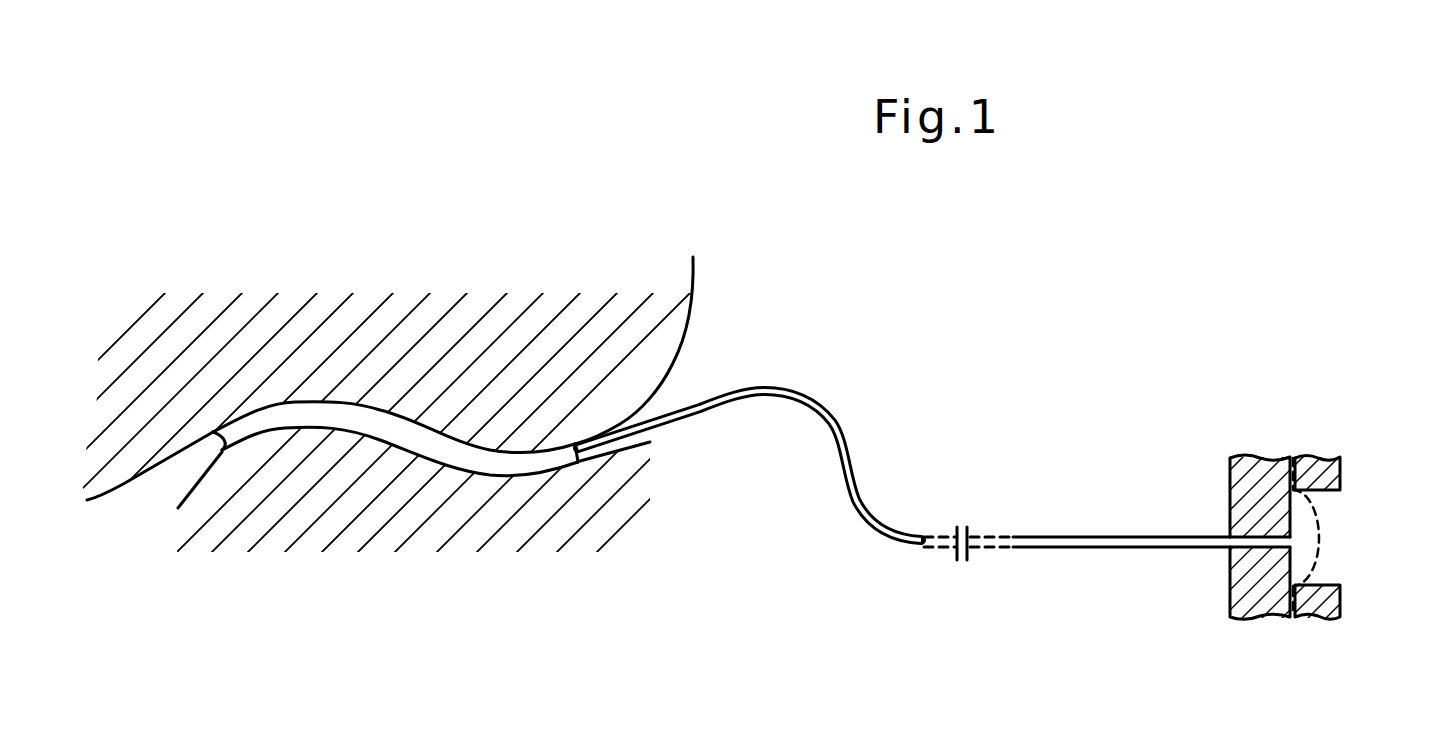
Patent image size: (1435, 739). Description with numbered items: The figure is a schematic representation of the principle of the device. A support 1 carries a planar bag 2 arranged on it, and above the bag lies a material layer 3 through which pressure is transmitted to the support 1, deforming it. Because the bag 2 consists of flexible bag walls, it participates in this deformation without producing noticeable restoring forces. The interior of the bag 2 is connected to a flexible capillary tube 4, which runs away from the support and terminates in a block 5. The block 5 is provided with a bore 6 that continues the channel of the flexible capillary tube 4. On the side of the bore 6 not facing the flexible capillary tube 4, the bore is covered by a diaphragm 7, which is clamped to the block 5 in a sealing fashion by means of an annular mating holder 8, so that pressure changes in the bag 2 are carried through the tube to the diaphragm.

The support 1 is at (423, 520).
The planar bag 2 is at (275, 423).
The material layer 3 is at (411, 330).
The flexible capillary tube 4 is at (853, 443).
The block 5 is at (1247, 483).
The bore 6 is at (1258, 543).
The diaphragm 7 is at (1320, 525).
The annular mating holder 8 is at (1340, 603).